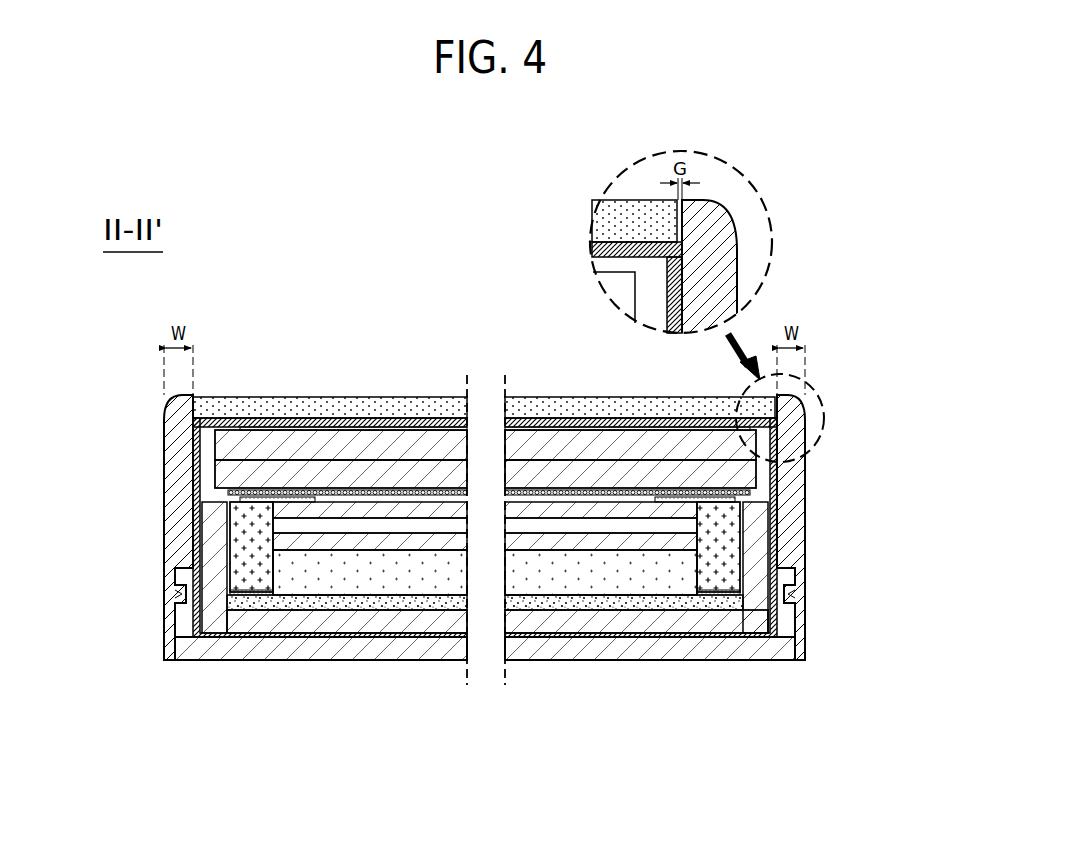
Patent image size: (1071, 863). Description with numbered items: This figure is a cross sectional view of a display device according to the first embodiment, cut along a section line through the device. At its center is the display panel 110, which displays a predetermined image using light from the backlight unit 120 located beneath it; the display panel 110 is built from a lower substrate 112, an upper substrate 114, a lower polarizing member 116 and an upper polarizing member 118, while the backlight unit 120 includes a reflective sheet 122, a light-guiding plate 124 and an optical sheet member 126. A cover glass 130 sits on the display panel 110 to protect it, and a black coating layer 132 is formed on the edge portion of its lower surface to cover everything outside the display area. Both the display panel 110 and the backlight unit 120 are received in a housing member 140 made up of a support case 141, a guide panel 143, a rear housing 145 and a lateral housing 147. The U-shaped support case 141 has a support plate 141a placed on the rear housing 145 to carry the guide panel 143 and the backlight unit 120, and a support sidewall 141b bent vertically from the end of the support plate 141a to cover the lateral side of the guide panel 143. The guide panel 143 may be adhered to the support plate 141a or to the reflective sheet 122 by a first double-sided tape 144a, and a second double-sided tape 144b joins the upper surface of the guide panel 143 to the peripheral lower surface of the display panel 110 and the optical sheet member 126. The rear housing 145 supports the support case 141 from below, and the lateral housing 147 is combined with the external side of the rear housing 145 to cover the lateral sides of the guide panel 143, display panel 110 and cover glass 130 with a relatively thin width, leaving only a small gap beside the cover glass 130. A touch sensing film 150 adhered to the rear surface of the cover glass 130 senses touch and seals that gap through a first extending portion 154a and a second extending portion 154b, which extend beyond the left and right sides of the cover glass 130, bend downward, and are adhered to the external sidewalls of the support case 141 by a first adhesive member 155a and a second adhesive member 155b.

The display panel 110 is at (485, 396).
The lower substrate 112 is at (405, 475).
The upper substrate 114 is at (363, 445).
The lower polarizing member 116 is at (443, 488).
The upper polarizing member 118 is at (316, 424).
The backlight unit 120 is at (485, 631).
The reflective sheet 122 is at (650, 605).
The light-guiding plate 124 is at (605, 568).
The optical sheet member 126 is at (572, 542).
The cover glass 130 is at (268, 403).
The black coating layer 132 is at (227, 418).
The housing member 140 is at (468, 651).
The support case 141 is at (486, 628).
The support plate 141a is at (287, 622).
The support sidewall 141b is at (218, 563).
The guide panel 143 is at (260, 562).
The rear housing 145 is at (390, 650).
The lateral housing 147 is at (172, 652).
The touch sensing film 150 is at (487, 439).
The first extending portion 154a is at (197, 470).
The second extending portion 154b is at (773, 455).
The first double-sided tape 144a is at (720, 593).
The second double-sided tape 144b is at (765, 500).
The first adhesive member 155a is at (204, 535).
The second adhesive member 155b is at (770, 552).